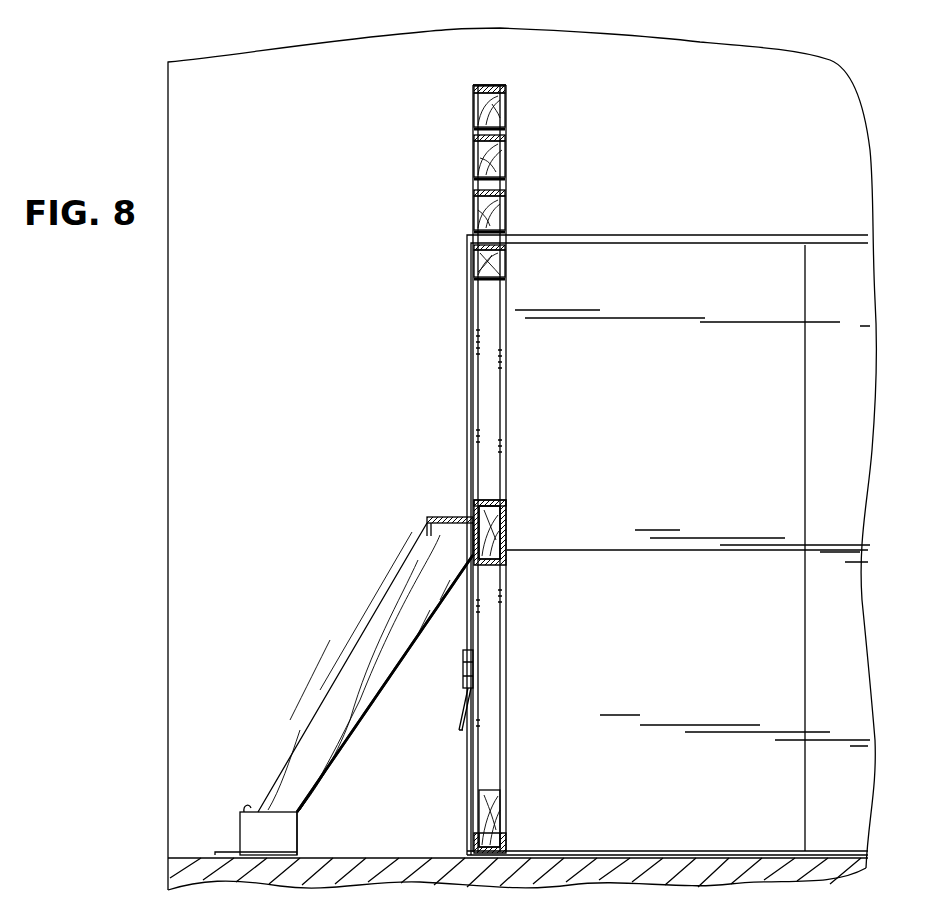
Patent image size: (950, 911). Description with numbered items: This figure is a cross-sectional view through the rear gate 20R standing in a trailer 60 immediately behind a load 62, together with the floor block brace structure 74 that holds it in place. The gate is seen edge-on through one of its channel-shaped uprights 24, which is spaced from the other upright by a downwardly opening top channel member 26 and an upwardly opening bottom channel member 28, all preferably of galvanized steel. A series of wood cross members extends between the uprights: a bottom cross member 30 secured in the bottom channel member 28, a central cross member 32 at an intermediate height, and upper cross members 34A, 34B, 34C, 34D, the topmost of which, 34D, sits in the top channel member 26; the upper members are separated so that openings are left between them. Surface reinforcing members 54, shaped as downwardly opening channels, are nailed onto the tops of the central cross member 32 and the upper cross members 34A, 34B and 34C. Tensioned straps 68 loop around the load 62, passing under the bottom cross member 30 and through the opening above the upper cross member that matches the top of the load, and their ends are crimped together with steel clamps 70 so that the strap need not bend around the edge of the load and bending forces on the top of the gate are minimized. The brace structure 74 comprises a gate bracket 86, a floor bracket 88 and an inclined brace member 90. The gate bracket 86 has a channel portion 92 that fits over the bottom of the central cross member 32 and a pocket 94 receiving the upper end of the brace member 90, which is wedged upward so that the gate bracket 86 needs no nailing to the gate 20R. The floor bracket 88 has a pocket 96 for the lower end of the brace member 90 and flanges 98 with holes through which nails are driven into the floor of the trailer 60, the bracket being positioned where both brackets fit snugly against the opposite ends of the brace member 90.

The rear gate 20R is at (509, 190).
The channel-shaped upright 24 is at (490, 430).
The top channel member 26 is at (492, 85).
The bottom channel member 28 is at (503, 838).
The bottom cross member 30 is at (497, 805).
The central cross member 32 is at (505, 520).
The upper cross member 34A is at (482, 262).
The upper cross member 34B is at (500, 218).
The upper cross member 34C is at (473, 170).
The upper cross member 34D is at (497, 112).
The surface reinforcing member 54 is at (505, 138).
The trailer 60 is at (318, 227).
The load 62 is at (683, 425).
The strap 68 is at (608, 235).
The steel clamp 70 is at (462, 668).
The floor block brace structure 74 is at (331, 666).
The gate bracket 86 is at (456, 515).
The floor bracket 88 is at (298, 836).
The brace member 90 is at (357, 718).
The channel portion 92 is at (506, 546).
The pocket 94 is at (428, 517).
The pocket 96 is at (281, 843).
The flange 98 is at (228, 852).